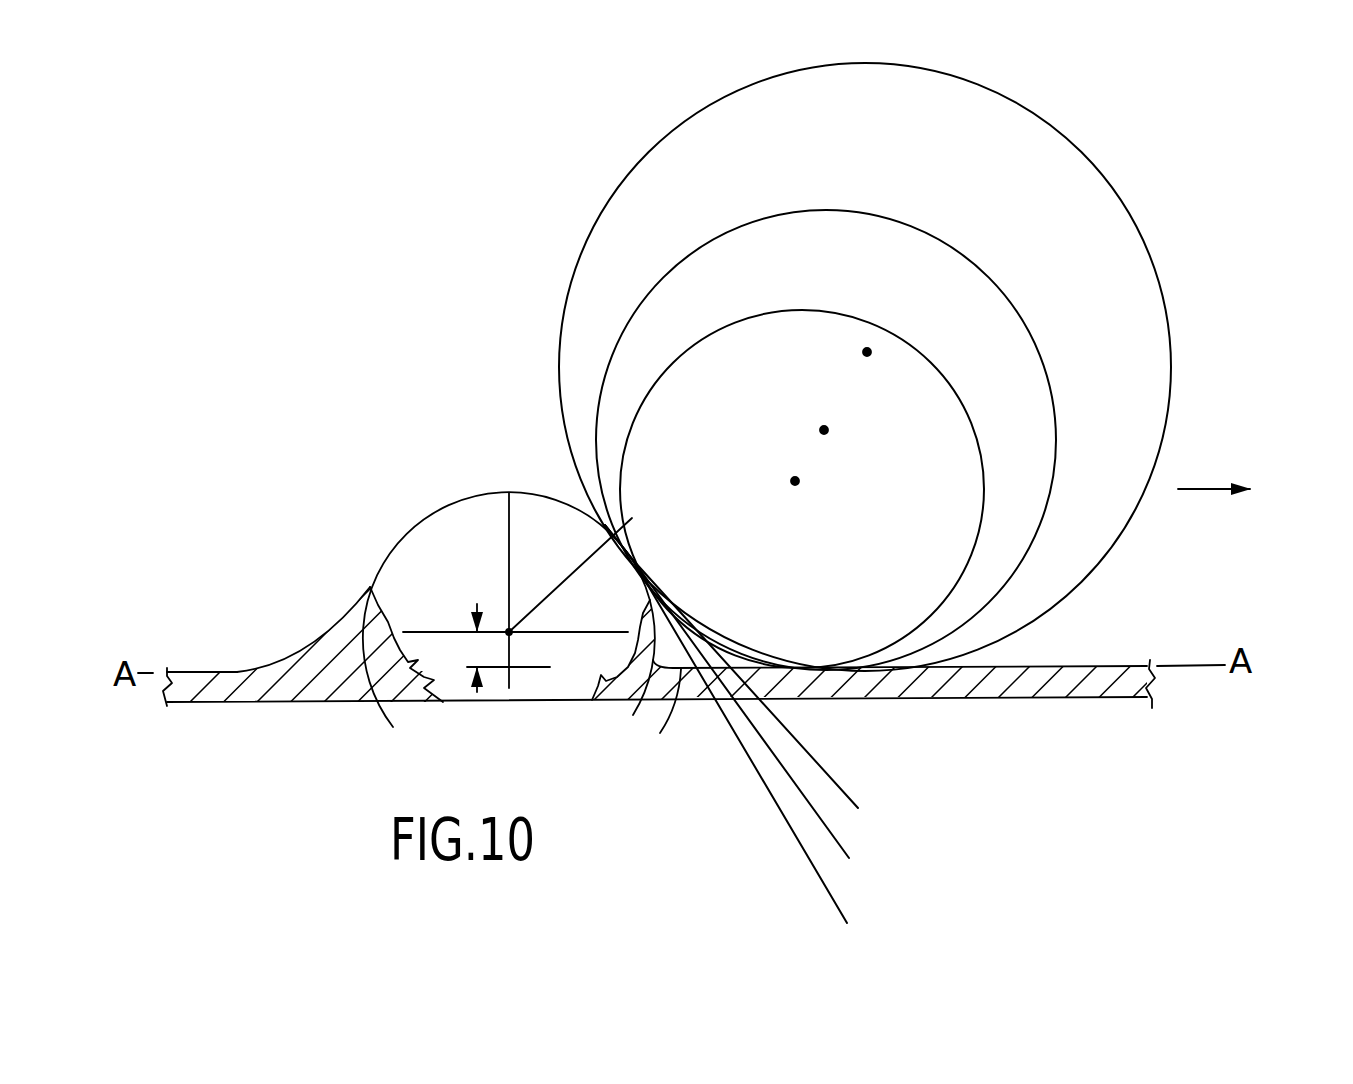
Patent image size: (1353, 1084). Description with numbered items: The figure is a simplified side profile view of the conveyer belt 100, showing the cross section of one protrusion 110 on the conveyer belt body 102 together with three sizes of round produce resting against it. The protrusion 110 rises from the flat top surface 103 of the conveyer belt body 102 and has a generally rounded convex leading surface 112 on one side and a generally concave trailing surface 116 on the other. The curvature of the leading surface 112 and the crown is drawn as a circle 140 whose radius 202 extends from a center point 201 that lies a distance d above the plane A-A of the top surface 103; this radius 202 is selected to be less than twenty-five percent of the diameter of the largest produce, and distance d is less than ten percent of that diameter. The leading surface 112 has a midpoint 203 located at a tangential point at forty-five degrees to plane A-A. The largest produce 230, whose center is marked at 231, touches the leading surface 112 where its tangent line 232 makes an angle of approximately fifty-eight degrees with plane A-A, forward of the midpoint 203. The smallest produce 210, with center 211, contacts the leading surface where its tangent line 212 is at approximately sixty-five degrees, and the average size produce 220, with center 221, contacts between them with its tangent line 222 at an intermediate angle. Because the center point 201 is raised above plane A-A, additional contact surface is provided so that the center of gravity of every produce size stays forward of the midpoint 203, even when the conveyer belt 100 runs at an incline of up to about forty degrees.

The conveyer belt 100 is at (392, 268).
The conveyer belt body 102 is at (1083, 688).
The top surface 103 is at (1072, 666).
The protrusion 110 is at (424, 510).
The leading surface 112 is at (678, 703).
The trailing surface 116 is at (337, 622).
The drop spherical surface circle 140 is at (510, 490).
The center point 201 is at (507, 628).
The radius 202 is at (560, 574).
The midpoint 203 is at (630, 520).
The smallest produce 210 is at (908, 348).
The center of first sphere 211 is at (796, 487).
The tangent line 212 is at (803, 848).
The average size produce 220 is at (955, 250).
The center of second sphere 221 is at (826, 436).
The tangent line 222 is at (790, 781).
The largest produce 230 is at (1107, 178).
The center of third sphere 231 is at (869, 358).
The tangent line 232 is at (785, 728).